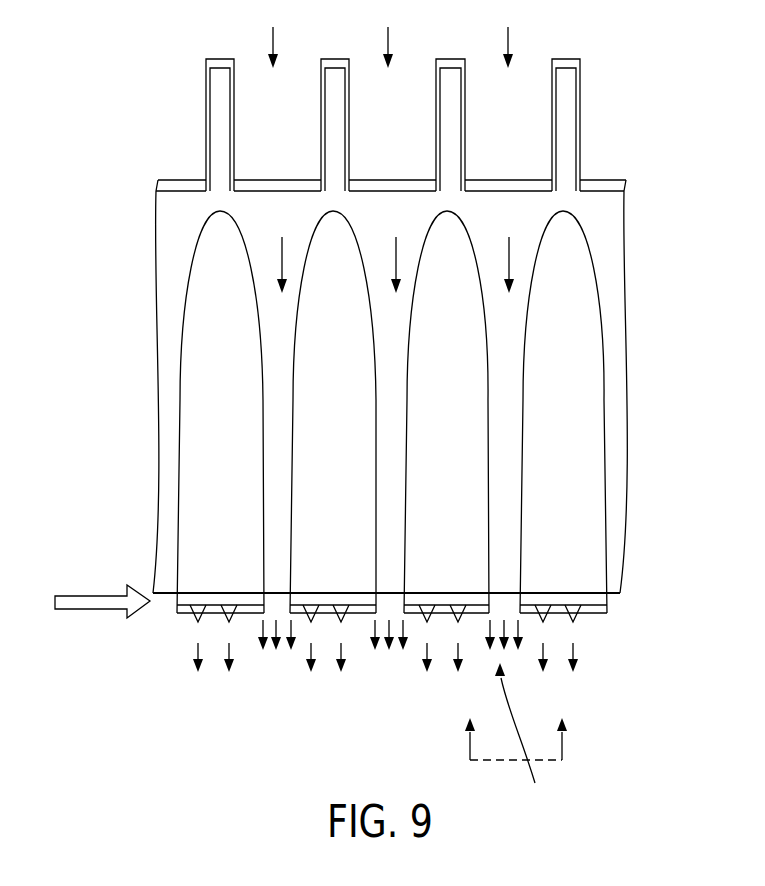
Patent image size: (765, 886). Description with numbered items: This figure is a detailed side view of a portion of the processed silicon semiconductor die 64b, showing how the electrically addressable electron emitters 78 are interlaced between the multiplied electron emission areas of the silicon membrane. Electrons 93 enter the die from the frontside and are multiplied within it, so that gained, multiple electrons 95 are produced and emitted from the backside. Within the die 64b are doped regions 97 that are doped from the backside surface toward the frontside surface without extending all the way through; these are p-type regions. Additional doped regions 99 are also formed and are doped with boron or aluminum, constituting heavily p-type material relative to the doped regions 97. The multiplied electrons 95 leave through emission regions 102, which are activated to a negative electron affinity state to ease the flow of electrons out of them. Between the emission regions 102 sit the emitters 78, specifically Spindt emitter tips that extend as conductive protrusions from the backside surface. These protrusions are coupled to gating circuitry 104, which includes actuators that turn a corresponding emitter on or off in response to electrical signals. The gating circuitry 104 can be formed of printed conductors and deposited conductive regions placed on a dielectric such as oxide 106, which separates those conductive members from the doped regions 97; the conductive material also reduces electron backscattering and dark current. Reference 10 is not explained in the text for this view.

The patient airway / exhaust flow 10 is at (516, 722).
The processed silicon semiconductor die 64b is at (597, 230).
The electrically addressable electron emitters 78 is at (565, 630).
The electrons 93 is at (268, 42).
The multiplied electrons 95 is at (518, 738).
The doped regions 97 is at (303, 479).
The doped regions 99 is at (213, 64).
The emission regions 102 is at (275, 593).
The gating circuitry 104 is at (563, 612).
The oxide 106 is at (607, 602).